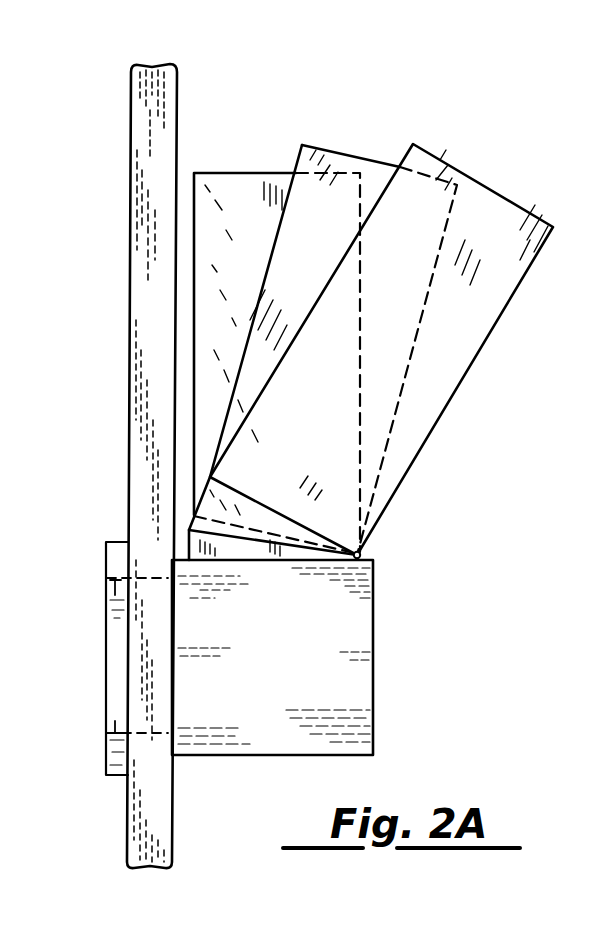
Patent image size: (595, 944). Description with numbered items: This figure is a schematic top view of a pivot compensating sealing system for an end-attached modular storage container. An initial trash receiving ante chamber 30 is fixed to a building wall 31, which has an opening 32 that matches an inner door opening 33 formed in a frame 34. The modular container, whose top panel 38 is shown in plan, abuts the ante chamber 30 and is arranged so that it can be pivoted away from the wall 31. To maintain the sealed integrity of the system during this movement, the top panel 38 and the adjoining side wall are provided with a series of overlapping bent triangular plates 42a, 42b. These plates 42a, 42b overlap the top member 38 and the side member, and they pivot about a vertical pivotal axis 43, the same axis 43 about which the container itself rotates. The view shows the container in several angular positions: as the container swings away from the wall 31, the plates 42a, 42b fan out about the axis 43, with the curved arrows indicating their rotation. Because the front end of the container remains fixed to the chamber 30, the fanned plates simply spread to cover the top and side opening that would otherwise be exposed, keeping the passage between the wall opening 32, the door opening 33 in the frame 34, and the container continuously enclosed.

The trash receiving ante chamber 30 is at (319, 675).
The building wall 31 is at (148, 823).
The opening 32 is at (143, 578).
The inner door opening 33 is at (108, 602).
The frame 34 is at (112, 778).
The top panel 38 is at (407, 278).
The bent triangular plate 42a is at (232, 508).
The bent triangular plate 42b is at (243, 543).
The vertical pivotal axis 43 is at (362, 553).